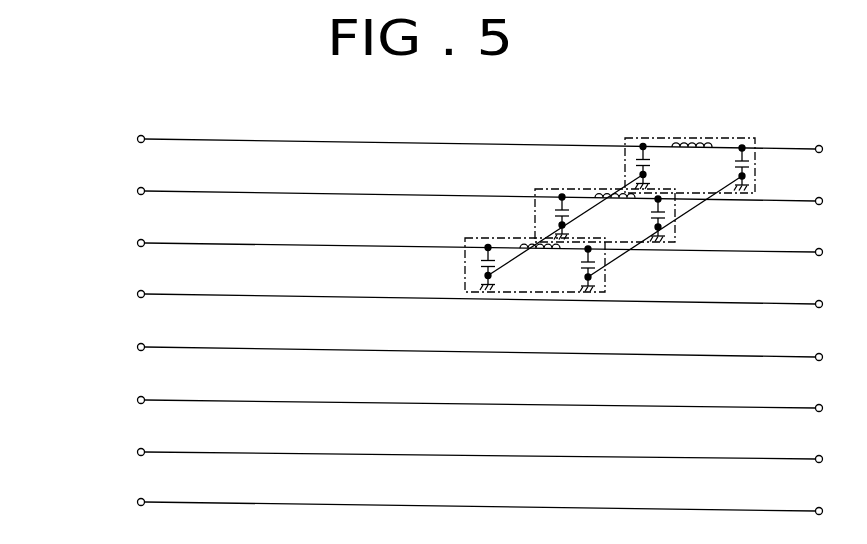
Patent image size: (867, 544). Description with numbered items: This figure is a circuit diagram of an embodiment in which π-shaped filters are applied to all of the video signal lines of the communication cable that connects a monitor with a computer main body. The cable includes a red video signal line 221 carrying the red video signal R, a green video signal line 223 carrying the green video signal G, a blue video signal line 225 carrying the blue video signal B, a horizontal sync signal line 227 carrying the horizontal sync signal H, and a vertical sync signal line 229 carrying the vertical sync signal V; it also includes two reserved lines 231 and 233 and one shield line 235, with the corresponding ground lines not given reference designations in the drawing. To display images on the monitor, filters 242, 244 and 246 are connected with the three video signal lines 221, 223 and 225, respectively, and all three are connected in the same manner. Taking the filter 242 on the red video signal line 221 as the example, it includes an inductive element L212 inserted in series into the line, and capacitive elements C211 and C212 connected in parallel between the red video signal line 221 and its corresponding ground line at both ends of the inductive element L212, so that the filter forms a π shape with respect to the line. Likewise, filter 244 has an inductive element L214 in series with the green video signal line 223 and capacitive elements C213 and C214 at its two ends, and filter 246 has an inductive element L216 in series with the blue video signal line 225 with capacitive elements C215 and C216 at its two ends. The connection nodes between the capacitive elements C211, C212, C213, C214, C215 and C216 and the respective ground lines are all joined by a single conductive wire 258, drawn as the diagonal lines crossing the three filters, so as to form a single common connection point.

The red video signal line 221 is at (469, 130).
The green video signal line 223 is at (468, 182).
The blue video signal line 225 is at (469, 233).
The horizontal sync signal line 227 is at (468, 285).
The vertical sync signal line 229 is at (469, 338).
The reserved line 231 is at (425, 390).
The reserved line 233 is at (425, 442).
The shield line 235 is at (435, 492).
The filter 242 is at (697, 150).
The filter 244 is at (614, 206).
The filter 246 is at (535, 256).
The single conductive wire 258 is at (540, 205).
The capacitive element C211 is at (637, 168).
The capacitive element C212 is at (752, 178).
The capacitive element C213 is at (554, 219).
The capacitive element C214 is at (667, 226).
The capacitive element C215 is at (480, 262).
The capacitive element C216 is at (597, 270).
The inductive element L212 is at (706, 181).
The inductive element L214 is at (621, 233).
The inductive element L216 is at (545, 280).